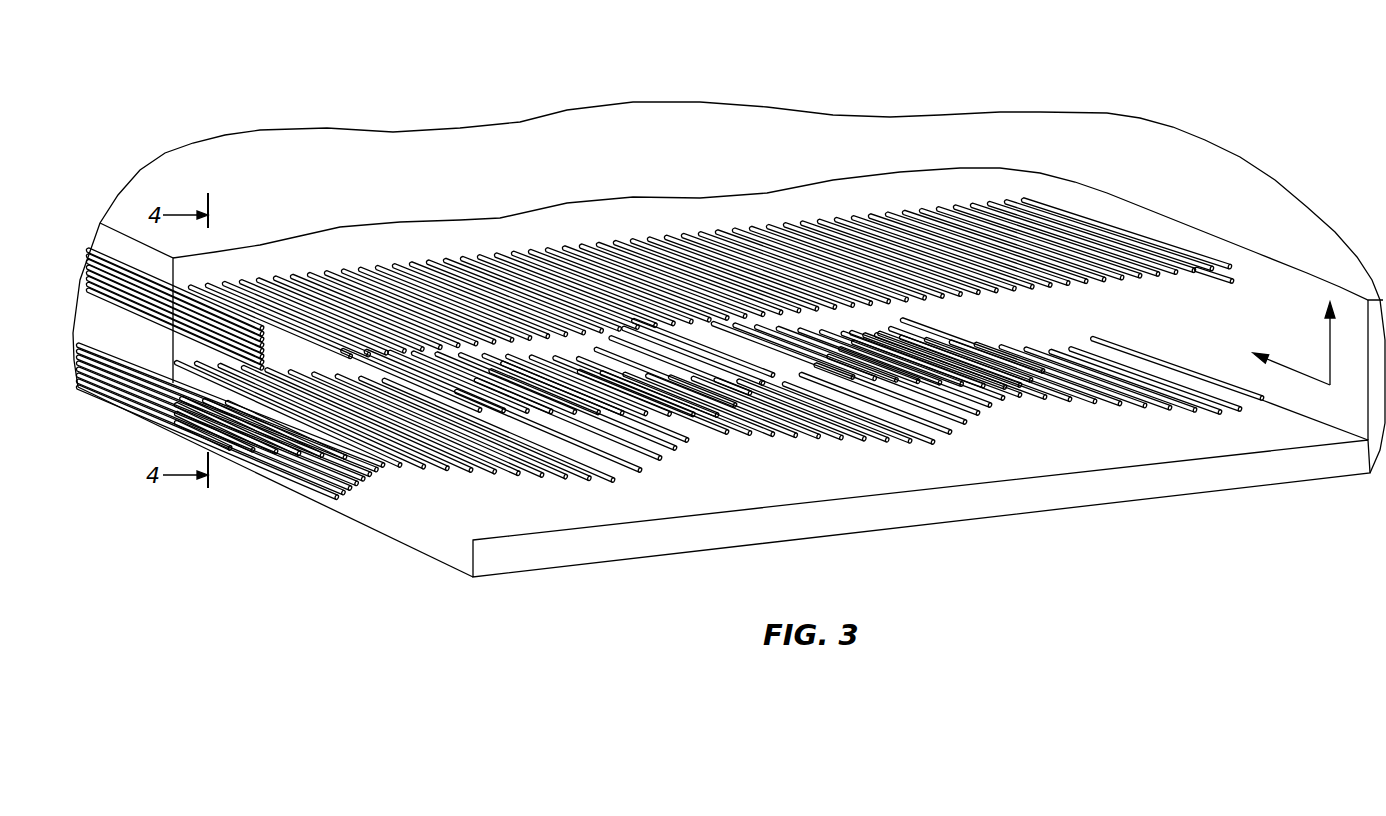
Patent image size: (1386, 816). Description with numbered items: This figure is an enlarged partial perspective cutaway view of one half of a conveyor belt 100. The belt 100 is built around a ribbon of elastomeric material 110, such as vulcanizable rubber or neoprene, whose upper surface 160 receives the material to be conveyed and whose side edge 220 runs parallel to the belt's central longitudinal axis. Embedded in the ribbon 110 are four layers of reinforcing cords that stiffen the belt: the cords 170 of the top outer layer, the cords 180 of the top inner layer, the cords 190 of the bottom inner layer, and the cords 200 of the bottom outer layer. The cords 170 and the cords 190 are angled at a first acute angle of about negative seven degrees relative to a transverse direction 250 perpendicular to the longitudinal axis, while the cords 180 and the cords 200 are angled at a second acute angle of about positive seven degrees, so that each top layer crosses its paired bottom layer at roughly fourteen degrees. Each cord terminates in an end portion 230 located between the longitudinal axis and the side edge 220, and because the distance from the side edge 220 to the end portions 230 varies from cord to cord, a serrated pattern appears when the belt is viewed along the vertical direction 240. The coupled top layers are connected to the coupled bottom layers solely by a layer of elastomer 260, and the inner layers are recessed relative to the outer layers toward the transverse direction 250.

The belt 100 is at (1104, 550).
The ribbon of elastomeric material 110 is at (1255, 205).
The upper surface 160 is at (1138, 155).
The reinforcing cords of the top outer layer 170 is at (1137, 290).
The reinforcing cords of the top inner layer 180 is at (373, 260).
The reinforcing cords of the bottom inner layer 190 is at (345, 455).
The reinforcing cords of the bottom outer layer 200 is at (488, 473).
The side edge 220 is at (1257, 470).
The end portion 230 is at (944, 464).
The vertical direction 240 is at (1328, 332).
The transverse direction 250 is at (1275, 360).
The layer of elastomer 260 is at (157, 347).